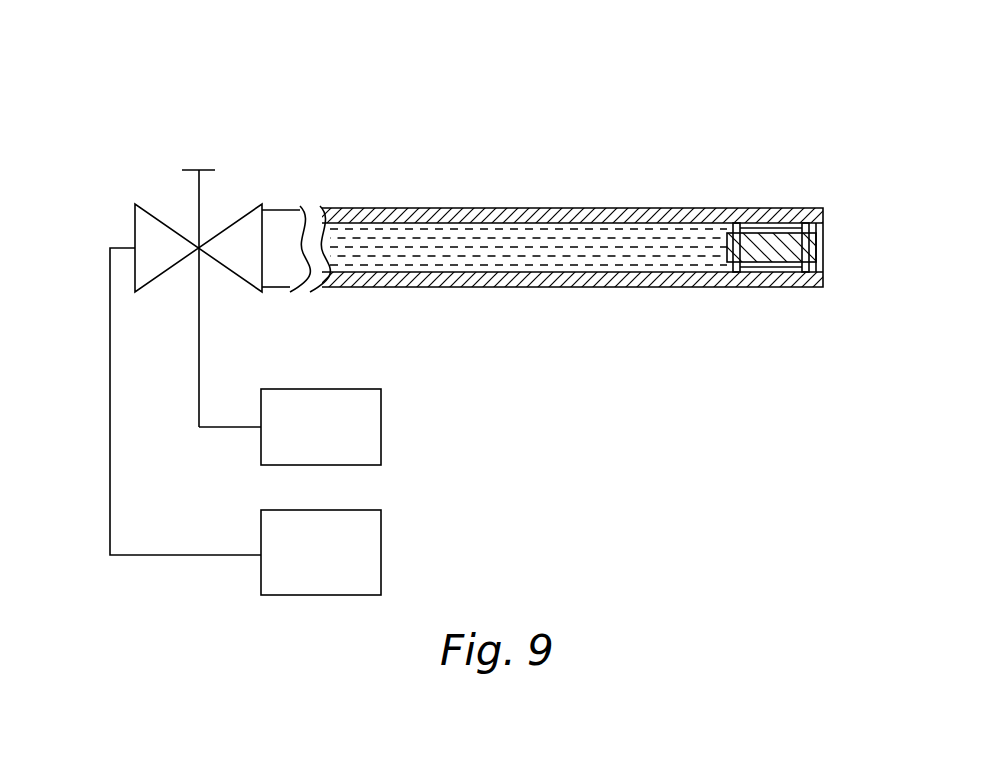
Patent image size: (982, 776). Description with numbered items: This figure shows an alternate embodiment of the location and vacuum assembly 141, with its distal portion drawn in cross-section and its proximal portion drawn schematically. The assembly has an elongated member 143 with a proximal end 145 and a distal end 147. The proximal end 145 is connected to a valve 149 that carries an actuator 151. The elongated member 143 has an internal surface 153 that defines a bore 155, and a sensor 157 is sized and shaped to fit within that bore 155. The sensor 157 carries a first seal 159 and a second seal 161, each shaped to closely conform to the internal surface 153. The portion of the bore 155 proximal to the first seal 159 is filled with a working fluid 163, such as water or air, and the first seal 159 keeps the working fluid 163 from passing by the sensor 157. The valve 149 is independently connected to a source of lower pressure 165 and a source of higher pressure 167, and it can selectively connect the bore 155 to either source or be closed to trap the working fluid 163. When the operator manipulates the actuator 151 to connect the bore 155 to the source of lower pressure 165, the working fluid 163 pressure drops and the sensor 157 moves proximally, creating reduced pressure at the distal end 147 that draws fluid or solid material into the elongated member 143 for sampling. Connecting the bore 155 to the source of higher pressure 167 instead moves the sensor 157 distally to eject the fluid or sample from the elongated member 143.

The location and vacuum assembly 141 is at (457, 80).
The elongated member 143 is at (522, 208).
The proximal end 145 is at (278, 223).
The distal end 147 is at (806, 210).
The valve 149 is at (135, 223).
The actuator 151 is at (190, 168).
The internal surface 153 is at (542, 262).
The bore 155 is at (515, 263).
The sensor 157 is at (728, 245).
The first seal 159 is at (730, 265).
The second seal 161 is at (817, 267).
The working fluid 163 is at (365, 240).
The source of lower pressure 165 is at (381, 421).
The source of higher pressure 167 is at (381, 548).